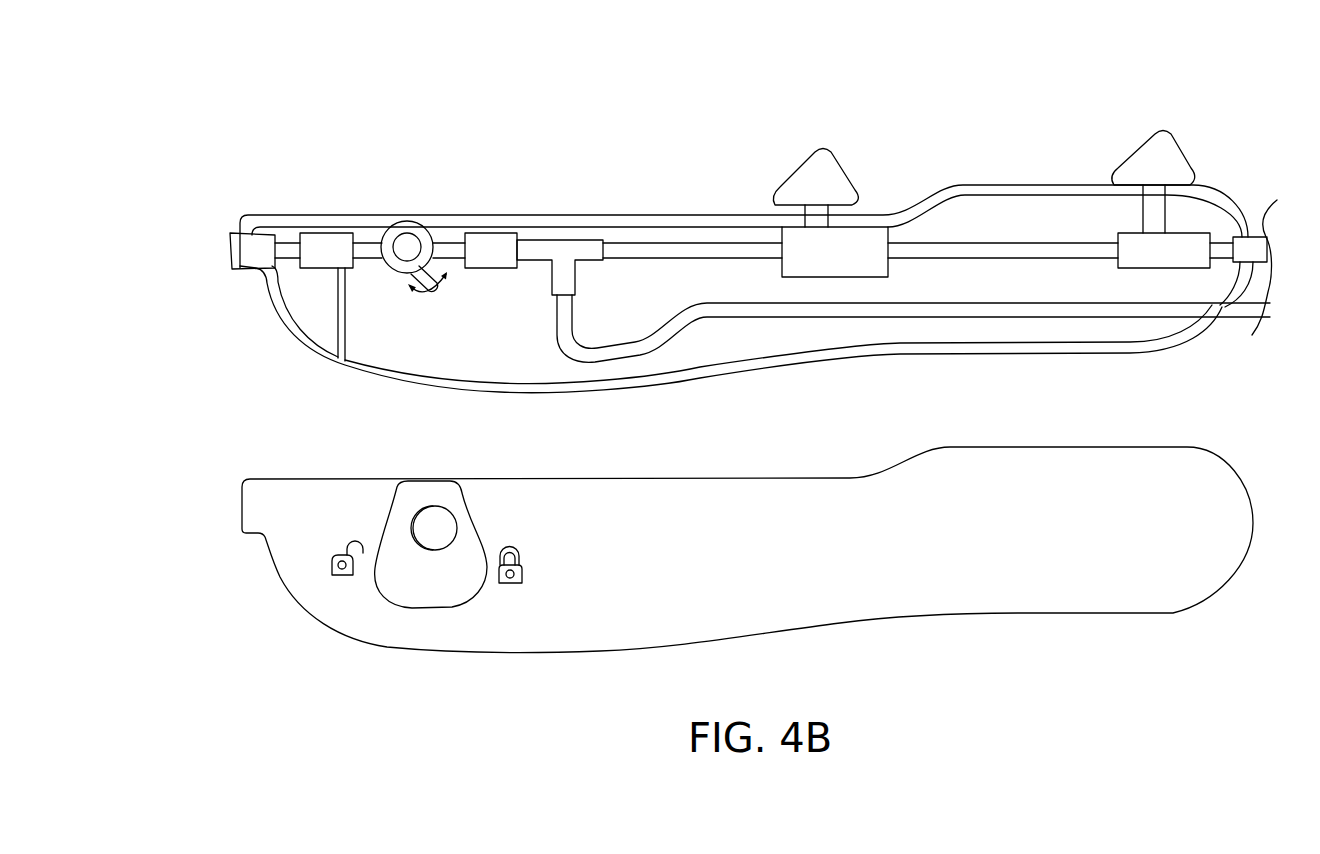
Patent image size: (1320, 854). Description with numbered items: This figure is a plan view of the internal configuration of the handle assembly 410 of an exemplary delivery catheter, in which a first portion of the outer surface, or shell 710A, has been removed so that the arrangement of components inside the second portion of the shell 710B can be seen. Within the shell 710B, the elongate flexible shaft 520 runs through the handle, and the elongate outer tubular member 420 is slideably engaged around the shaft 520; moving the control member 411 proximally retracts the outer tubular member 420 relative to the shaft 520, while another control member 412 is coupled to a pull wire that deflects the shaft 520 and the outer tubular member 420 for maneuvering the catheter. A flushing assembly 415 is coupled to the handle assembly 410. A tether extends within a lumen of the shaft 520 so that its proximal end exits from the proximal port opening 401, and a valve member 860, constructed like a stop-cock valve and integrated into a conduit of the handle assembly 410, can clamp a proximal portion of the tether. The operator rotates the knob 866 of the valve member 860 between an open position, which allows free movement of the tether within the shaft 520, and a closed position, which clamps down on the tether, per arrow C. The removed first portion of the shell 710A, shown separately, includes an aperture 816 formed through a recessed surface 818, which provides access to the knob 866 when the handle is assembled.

The handle assembly 410 is at (465, 98).
The proximal port opening 401 is at (232, 249).
The valve member 860 is at (465, 185).
The knob 866 is at (433, 237).
The control member 412 is at (810, 173).
The control member 411 is at (1148, 165).
The elongate flexible shaft 520 is at (757, 242).
The second portion of the shell 710B is at (965, 185).
The elongate outer tubular member 420 is at (1220, 258).
The flushing assembly 415 is at (750, 335).
The first portion of the shell 710A is at (553, 628).
The aperture 816 is at (422, 527).
The recessed surface 818 is at (463, 552).